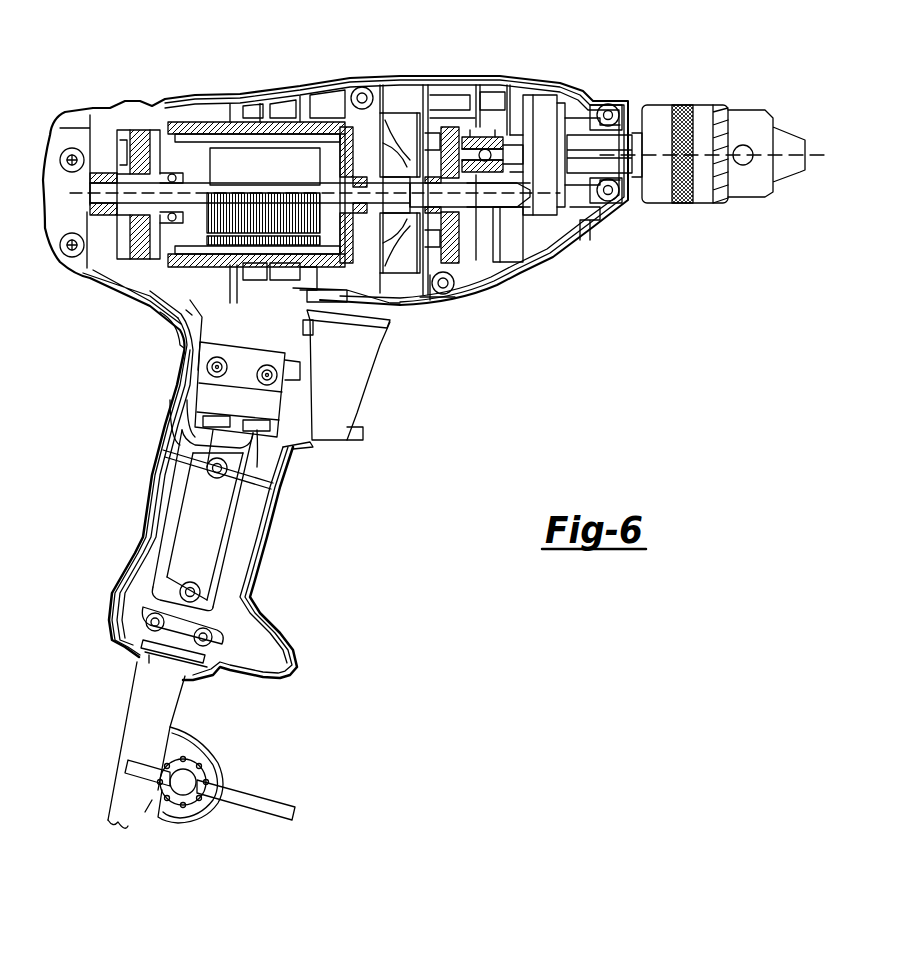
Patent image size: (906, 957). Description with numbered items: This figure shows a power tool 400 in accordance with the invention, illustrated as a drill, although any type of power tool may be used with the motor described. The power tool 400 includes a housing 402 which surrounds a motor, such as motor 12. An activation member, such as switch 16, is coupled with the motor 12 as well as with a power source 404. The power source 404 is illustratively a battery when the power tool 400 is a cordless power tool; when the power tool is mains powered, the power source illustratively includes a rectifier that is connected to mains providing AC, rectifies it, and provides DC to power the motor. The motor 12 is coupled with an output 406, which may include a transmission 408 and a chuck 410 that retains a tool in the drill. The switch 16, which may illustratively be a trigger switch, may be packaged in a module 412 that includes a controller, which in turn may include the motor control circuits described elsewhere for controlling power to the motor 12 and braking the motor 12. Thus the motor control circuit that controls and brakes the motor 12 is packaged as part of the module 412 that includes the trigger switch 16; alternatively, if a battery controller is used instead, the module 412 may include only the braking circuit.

The motor 12 is at (163, 130).
The switch 16 is at (345, 366).
The power tool 400 is at (472, 348).
The housing 402 is at (162, 320).
The power source 404 is at (165, 704).
The output 406 is at (542, 197).
The transmission 408 is at (548, 112).
The chuck 410 is at (750, 198).
The module 412 is at (280, 418).